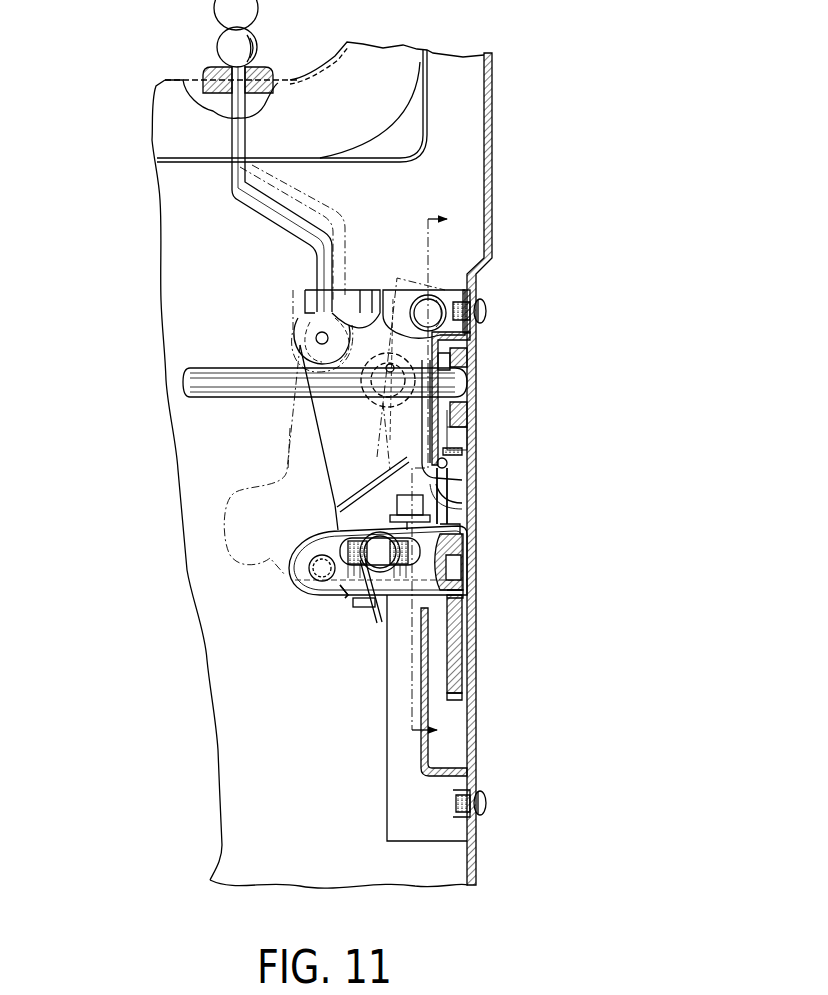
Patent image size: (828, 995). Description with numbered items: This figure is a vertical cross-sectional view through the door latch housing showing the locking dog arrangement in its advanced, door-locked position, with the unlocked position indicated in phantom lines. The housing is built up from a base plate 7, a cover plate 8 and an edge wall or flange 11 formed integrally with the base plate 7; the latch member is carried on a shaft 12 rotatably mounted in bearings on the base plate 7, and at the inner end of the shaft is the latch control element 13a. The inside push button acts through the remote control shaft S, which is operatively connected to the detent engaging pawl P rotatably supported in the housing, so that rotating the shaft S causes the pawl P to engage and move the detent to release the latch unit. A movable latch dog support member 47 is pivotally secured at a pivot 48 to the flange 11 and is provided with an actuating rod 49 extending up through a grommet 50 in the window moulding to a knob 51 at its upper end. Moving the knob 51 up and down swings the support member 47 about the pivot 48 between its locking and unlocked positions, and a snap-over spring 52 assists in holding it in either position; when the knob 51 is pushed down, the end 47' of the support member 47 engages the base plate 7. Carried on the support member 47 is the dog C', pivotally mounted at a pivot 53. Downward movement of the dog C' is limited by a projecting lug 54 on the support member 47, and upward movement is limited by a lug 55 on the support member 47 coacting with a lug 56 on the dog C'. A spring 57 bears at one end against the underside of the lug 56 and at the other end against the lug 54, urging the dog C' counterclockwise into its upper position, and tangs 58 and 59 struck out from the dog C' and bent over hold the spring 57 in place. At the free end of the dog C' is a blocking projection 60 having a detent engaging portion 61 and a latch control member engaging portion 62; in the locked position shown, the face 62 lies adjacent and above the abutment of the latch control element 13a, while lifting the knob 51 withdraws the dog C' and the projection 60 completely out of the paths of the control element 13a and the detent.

The base plate 7 is at (477, 467).
The cover plate 8 is at (420, 690).
The edge wall or flange 11 is at (396, 752).
The shaft 12 is at (437, 476).
The latch control element 13a is at (458, 655).
The latch dog support member 47 is at (316, 460).
The end of dog support member 47' is at (483, 508).
The pivot 48 is at (430, 300).
The actuating rod 49 is at (284, 233).
The grommet 50 is at (210, 72).
The knob 51 is at (216, 45).
The snap-over spring 52 is at (370, 410).
The pivot of dog 53 is at (311, 583).
The projecting lug 54 is at (363, 608).
The lug 55 is at (462, 502).
The coacting lug 56 is at (460, 524).
The spring 57 is at (388, 524).
The tang 58 is at (352, 538).
The tang 59 is at (396, 600).
The blocking projection 60 is at (461, 580).
The detent engaging portion 61 is at (461, 562).
The latch control member engaging portion 62 is at (462, 597).
The remote control shaft S is at (218, 368).
The detent engaging pawl P is at (462, 415).
The dog C' is at (335, 610).